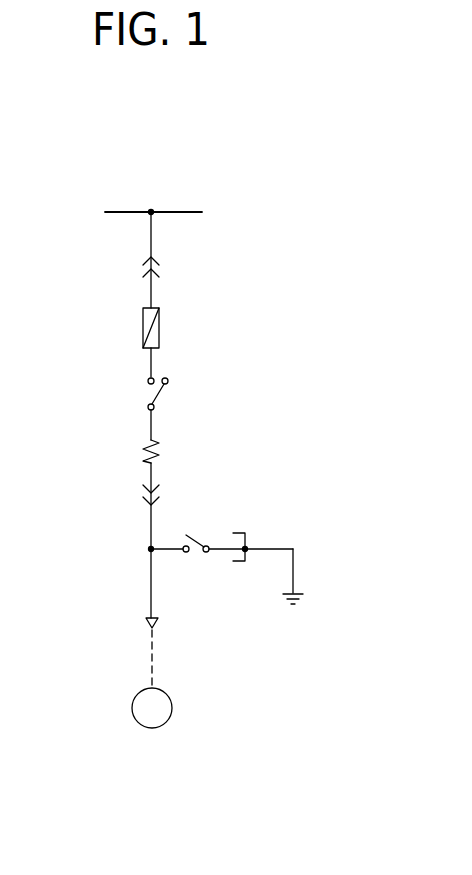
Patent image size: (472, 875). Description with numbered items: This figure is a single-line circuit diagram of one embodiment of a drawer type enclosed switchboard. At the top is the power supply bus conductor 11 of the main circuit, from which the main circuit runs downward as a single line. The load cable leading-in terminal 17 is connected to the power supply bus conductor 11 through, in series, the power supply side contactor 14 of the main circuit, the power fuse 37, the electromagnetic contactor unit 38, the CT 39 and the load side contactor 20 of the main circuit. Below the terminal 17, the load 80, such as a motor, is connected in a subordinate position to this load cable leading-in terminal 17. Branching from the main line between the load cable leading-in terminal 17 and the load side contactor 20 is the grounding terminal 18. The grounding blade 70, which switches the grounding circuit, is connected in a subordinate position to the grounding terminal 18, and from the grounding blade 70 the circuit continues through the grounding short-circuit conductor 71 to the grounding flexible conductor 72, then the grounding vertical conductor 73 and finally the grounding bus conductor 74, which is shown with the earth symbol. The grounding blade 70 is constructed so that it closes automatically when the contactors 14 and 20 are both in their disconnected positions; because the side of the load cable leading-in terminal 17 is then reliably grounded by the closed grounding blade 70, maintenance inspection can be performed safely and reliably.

The power supply bus conductor of the main circuit 11 is at (182, 212).
The power supply side contactor of the main circuit 14 is at (160, 268).
The power fuse 37 is at (159, 327).
The electromagnetic contactor unit 38 is at (157, 398).
The CT 39 is at (143, 452).
The load side contactor of the main circuit 20 is at (143, 496).
The earth terminal 18 is at (186, 553).
The grounding blade 70 is at (197, 540).
The grounding short-circuit conductor 71 is at (248, 532).
The grounding flexible conductor 72 is at (293, 549).
The grounding vertical conductor 73 is at (294, 577).
The grounding bus conductor 74 is at (304, 597).
The load cable leading-in terminal of the main circuit 17 is at (146, 621).
The load 80 is at (172, 704).